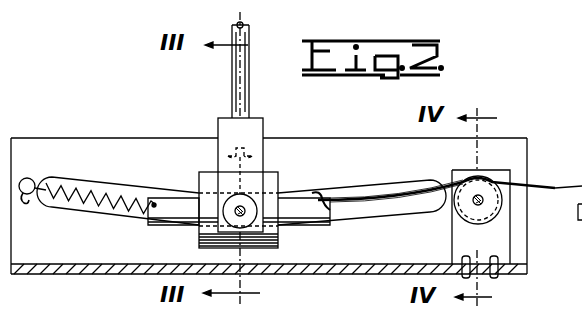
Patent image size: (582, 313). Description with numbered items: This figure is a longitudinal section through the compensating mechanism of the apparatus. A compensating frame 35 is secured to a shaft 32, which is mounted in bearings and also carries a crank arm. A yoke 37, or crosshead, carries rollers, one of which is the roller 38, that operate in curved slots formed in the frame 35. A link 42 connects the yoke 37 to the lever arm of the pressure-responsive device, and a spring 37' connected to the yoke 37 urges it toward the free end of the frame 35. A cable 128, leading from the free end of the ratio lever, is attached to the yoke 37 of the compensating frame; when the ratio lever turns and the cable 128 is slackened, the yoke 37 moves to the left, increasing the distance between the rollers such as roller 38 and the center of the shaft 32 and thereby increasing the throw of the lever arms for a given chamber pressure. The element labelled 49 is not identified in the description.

The compensating frame 35 is at (344, 138).
The yoke 37 is at (250, 174).
The spring 37' is at (87, 182).
The link 42 is at (249, 78).
The shaft 32 is at (483, 203).
The cable 128 is at (546, 184).
The cable 49 is at (568, 176).
The roller 38 is at (581, 237).